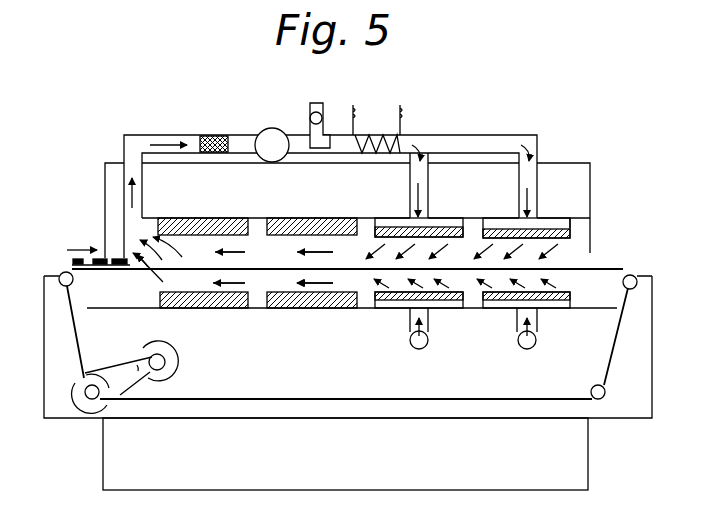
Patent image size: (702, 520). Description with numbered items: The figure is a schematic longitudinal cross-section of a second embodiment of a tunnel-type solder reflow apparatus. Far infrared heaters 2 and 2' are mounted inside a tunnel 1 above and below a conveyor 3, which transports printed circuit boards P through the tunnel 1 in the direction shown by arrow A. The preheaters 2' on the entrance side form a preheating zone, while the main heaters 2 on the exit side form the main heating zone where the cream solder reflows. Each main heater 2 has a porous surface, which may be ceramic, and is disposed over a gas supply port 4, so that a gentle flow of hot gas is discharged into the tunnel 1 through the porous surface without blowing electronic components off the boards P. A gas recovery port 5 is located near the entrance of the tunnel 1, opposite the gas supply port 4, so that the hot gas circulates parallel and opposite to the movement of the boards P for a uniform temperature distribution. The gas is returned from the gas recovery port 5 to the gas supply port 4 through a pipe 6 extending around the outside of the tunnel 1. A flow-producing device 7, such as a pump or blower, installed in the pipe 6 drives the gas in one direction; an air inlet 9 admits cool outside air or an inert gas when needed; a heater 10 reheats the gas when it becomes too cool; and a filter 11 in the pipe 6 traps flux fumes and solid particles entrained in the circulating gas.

The tunnel 1 is at (352, 259).
The main heaters 2 is at (469, 270).
The preheaters 2' is at (257, 268).
The conveyor 3 is at (603, 258).
The gas supply port 4 is at (552, 222).
The gas recovery port 5 is at (146, 228).
The pipe 6 is at (146, 137).
The flow-producing device 7 is at (272, 128).
The air inlet 9 is at (322, 109).
The heater 10 is at (371, 155).
The filter 11 is at (215, 136).
The printed circuit boards P is at (67, 259).
The direction of conveyance A is at (82, 240).